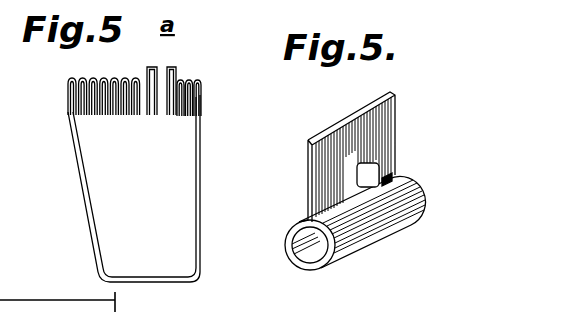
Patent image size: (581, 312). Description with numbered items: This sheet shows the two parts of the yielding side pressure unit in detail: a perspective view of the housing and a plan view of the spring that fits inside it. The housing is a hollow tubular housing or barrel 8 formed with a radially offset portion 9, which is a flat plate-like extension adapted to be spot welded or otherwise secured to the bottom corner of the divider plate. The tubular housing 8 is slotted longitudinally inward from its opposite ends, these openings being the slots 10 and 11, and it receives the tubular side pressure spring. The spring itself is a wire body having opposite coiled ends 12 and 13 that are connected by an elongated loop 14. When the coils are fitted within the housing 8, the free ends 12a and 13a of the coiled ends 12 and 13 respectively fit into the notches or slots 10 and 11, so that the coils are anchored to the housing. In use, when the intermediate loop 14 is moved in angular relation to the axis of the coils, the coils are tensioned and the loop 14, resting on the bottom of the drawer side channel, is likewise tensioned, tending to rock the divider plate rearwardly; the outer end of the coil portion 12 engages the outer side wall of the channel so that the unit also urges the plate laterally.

In FIG. 5, the tubular housing 8 is at (415, 196).
In FIG. 5, the radially offset portion 9 is at (389, 144).
In FIG. 5, the slot 10 is at (348, 211).
In FIG. 5, the slot 11 is at (405, 171).
In FIG. 5A, the coiled end 12 is at (76, 97).
In FIG. 5A, the free end 12a is at (149, 72).
In FIG. 5A, the coiled end 13 is at (202, 93).
In FIG. 5A, the free end 13a is at (175, 68).
In FIG. 5A, the loop 14 is at (203, 183).